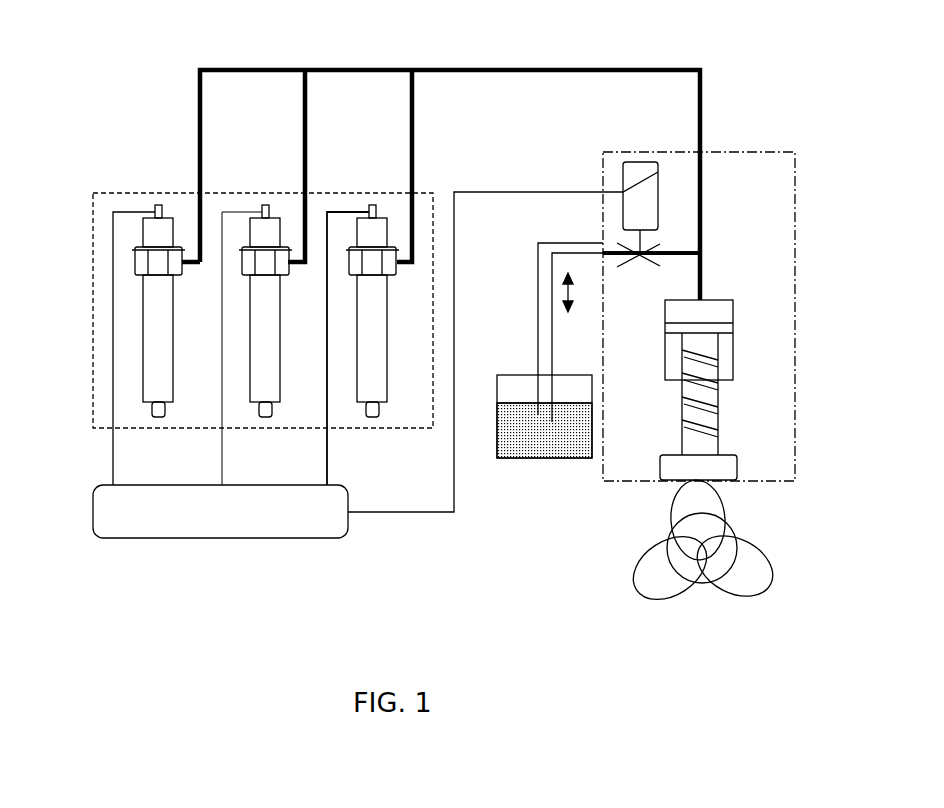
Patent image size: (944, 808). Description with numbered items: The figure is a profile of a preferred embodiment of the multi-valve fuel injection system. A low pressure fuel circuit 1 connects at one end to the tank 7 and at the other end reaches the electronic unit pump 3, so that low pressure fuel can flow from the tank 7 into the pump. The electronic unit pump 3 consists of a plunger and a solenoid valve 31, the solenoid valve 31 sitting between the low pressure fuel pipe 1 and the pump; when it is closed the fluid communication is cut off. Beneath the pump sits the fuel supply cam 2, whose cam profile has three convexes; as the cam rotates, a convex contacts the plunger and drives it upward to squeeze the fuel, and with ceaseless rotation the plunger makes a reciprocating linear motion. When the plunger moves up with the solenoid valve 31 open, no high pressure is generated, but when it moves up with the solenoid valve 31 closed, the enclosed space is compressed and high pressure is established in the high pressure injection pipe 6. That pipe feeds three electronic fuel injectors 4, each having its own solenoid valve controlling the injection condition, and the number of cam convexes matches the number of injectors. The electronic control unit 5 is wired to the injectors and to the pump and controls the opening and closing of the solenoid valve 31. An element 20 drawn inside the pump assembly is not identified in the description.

The low pressure fuel circuit 1 is at (540, 313).
The fuel supply cam 2 is at (733, 533).
The electronic unit pump 3 is at (797, 252).
The electronic fuel injector 4 is at (92, 293).
The electronic control unit 5 is at (343, 487).
The high pressure injection pipe 6 is at (435, 70).
The tank 7 is at (523, 460).
The spring actuator 20 is at (720, 410).
The solenoid valve 31 is at (662, 248).